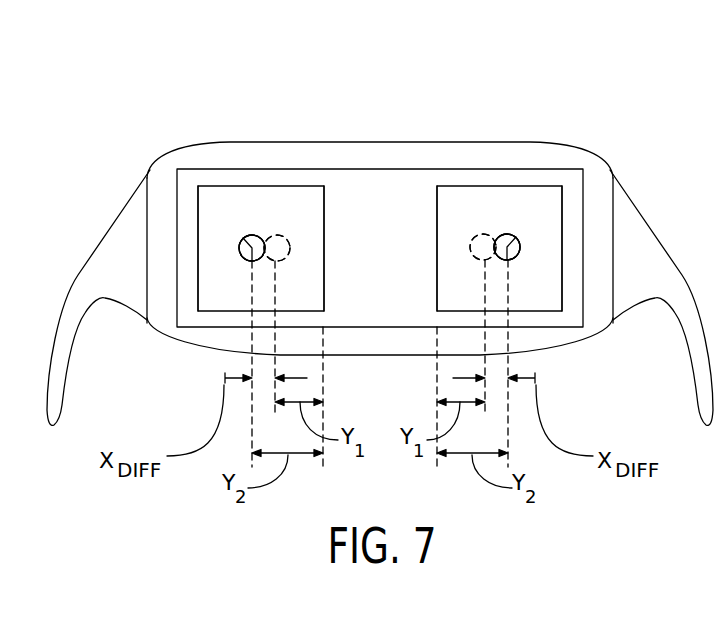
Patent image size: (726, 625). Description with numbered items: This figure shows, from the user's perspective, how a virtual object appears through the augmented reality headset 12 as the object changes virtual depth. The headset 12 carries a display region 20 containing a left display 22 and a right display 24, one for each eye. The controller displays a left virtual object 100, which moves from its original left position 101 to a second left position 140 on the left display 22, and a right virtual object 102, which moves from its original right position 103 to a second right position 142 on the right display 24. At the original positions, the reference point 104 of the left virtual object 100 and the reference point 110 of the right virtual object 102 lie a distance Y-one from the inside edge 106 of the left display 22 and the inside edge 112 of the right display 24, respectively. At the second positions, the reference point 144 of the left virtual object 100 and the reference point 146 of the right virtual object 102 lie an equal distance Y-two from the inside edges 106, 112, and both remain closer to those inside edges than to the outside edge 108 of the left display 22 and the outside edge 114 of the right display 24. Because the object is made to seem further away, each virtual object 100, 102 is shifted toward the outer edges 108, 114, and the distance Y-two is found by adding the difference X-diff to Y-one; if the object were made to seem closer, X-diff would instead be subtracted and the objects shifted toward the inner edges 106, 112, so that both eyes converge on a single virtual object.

The augmented reality headset 12 is at (458, 62).
The display area 20 is at (380, 169).
The left display 22 is at (230, 187).
The right display 24 is at (530, 186).
The left virtual object 100 is at (239, 248).
The original left position 101 is at (272, 235).
The right virtual object 102 is at (520, 247).
The original right position 103 is at (485, 234).
The reference point of the left virtual object 104 is at (290, 253).
The inside edge of the left display 106 is at (324, 218).
The outside edge of the left display 108 is at (198, 285).
The reference point of the right virtual object 110 is at (470, 252).
The inside edge of the right display 112 is at (437, 218).
The outside edge of the right display 114 is at (562, 285).
The second left position 140 is at (243, 240).
The second right position 142 is at (517, 240).
The reference point of the left virtual object at the second left position 144 is at (245, 257).
The reference point of the right virtual object at the second right position 146 is at (516, 258).